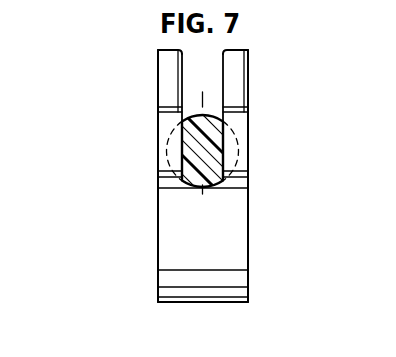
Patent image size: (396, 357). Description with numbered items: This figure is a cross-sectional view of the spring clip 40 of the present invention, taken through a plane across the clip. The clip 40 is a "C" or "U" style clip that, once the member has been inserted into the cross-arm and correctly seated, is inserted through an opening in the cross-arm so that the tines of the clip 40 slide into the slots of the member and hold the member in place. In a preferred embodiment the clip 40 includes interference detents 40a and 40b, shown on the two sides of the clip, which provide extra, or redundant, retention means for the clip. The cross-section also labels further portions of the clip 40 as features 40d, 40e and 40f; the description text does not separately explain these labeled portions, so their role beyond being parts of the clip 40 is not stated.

The spring clip 40 is at (238, 232).
The interference detent 40a is at (158, 112).
The interference detent 40b is at (248, 158).
The ball receiving slot 40d is at (158, 121).
The slot bottom 40e is at (158, 166).
The arm upper end 40f is at (156, 51).